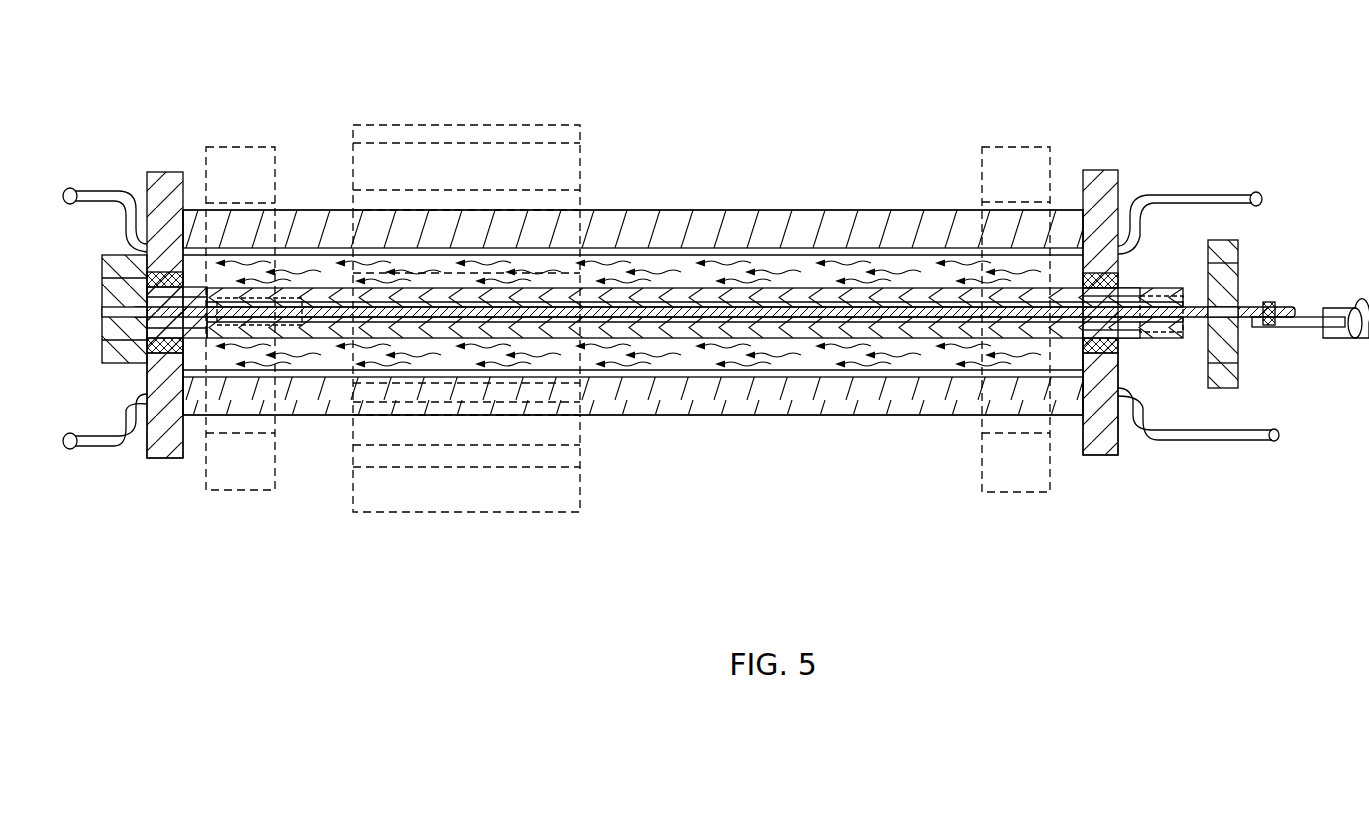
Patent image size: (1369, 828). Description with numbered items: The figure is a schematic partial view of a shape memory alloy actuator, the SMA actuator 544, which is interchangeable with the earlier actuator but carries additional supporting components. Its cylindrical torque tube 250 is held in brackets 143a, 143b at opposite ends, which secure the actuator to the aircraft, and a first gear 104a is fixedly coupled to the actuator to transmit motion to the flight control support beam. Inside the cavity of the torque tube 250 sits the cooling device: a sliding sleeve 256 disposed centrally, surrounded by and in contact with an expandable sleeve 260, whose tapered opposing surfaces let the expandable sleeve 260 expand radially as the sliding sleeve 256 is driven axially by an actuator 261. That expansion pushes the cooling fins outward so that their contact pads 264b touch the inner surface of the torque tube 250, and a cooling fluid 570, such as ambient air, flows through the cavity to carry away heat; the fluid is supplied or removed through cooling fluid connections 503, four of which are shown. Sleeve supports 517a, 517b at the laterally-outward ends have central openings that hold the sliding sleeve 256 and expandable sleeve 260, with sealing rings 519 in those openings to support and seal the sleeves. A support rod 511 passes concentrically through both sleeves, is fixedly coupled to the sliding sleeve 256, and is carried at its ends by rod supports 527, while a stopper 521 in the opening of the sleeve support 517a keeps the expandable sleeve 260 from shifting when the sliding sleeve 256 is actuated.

The cooling fluid connections 503 is at (80, 190).
The sleeve support 517a is at (163, 185).
The sleeve support 517b is at (1100, 185).
The bracket 143a is at (242, 147).
The bracket 143b is at (1026, 147).
The first gear 104a is at (485, 125).
The torque tube 250 is at (625, 228).
The contact pad 264b is at (733, 250).
The cooling fluid 570 is at (773, 272).
The SMA actuator 544 is at (893, 190).
The expandable sleeve 260 is at (1132, 292).
The sliding sleeve 256 is at (1150, 335).
The support rod 511 is at (1285, 305).
The actuator 261 is at (1340, 340).
The rod supports 527 is at (100, 280).
The stopper 521 is at (140, 328).
The sealing rings 519 is at (164, 462).